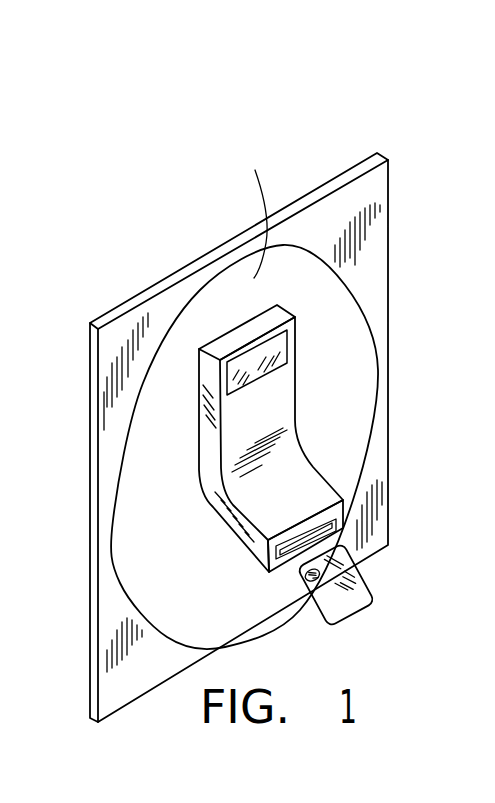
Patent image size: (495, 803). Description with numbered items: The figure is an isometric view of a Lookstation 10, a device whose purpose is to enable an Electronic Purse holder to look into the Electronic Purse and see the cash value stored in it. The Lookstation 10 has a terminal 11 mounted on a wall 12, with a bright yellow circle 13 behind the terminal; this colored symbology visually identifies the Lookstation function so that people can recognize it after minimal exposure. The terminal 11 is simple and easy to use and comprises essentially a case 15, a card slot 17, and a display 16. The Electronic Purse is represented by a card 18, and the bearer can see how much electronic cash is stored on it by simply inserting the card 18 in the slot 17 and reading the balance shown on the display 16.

The Lookstation 10 is at (441, 521).
The terminal 11 is at (289, 402).
The wall 12 is at (377, 247).
The bright yellow circle 13 is at (350, 333).
The case 15 is at (293, 484).
The display 16 is at (238, 362).
The card slot 17 is at (330, 526).
The card 18 is at (360, 597).